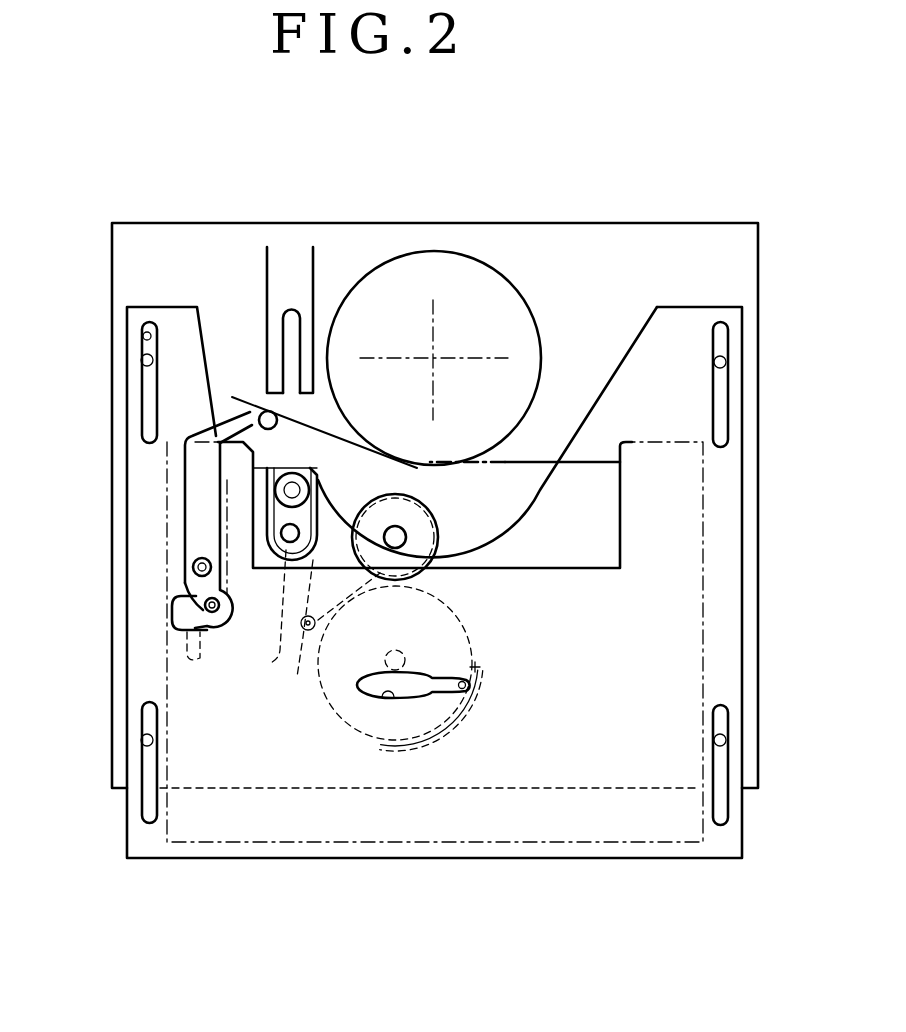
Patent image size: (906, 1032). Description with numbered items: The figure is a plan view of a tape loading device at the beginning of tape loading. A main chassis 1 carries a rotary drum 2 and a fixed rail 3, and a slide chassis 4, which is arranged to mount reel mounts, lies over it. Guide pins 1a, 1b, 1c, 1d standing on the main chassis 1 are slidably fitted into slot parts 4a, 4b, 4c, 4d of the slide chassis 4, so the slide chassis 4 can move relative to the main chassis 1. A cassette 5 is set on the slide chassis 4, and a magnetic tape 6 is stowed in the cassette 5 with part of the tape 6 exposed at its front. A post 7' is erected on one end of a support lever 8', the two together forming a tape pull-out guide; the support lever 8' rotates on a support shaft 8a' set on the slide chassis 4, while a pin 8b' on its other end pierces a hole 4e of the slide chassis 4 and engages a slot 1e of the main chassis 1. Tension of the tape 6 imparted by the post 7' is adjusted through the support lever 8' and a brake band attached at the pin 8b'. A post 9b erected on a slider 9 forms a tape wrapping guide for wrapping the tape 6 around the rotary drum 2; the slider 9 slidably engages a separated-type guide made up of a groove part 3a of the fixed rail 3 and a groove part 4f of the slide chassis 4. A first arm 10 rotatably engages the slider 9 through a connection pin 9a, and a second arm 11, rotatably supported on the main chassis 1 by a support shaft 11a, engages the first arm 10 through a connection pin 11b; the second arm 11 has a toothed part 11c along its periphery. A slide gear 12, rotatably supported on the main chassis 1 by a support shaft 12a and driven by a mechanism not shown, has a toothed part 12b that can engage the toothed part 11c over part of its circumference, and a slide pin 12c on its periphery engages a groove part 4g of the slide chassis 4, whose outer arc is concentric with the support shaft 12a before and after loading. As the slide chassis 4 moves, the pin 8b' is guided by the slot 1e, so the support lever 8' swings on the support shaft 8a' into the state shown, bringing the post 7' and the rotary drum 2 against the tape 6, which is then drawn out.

The main chassis 1 is at (760, 262).
The guide pin 1a is at (145, 362).
The guide pin 1b is at (148, 740).
The guide pin 1c is at (726, 740).
The guide pin 1d is at (726, 362).
The slot of main chassis 1e is at (185, 662).
The rotary drum 2 is at (497, 265).
The fixed rail 3 is at (279, 277).
The groove part of fixed rail 3a is at (293, 308).
The slide chassis 4 is at (742, 830).
The slot part 4a is at (145, 335).
The slot part 4b is at (147, 778).
The slot part 4c is at (720, 813).
The slot part 4d is at (723, 345).
The hole of slide chassis 4e is at (178, 618).
The groove part of slide chassis 4f is at (293, 470).
The groove part of slide chassis 4g is at (380, 693).
The cassette 5 is at (707, 642).
The magnetic tape 6 is at (547, 458).
The post 7' is at (324, 383).
The support lever 8' is at (218, 481).
The support shaft 8a' is at (133, 554).
The pin 8b' is at (135, 601).
The slider 9 is at (275, 517).
The connection pin 9a is at (283, 542).
The post 9b is at (297, 488).
The first arm 10 is at (284, 653).
The second arm 11 is at (425, 542).
The support shaft 11a is at (403, 537).
The connection pin 11b is at (306, 632).
The toothed part 11c is at (432, 508).
The slide gear 12 is at (458, 667).
The support shaft 12a is at (400, 657).
The toothed part 12b is at (437, 743).
The slide pin 12c is at (467, 687).